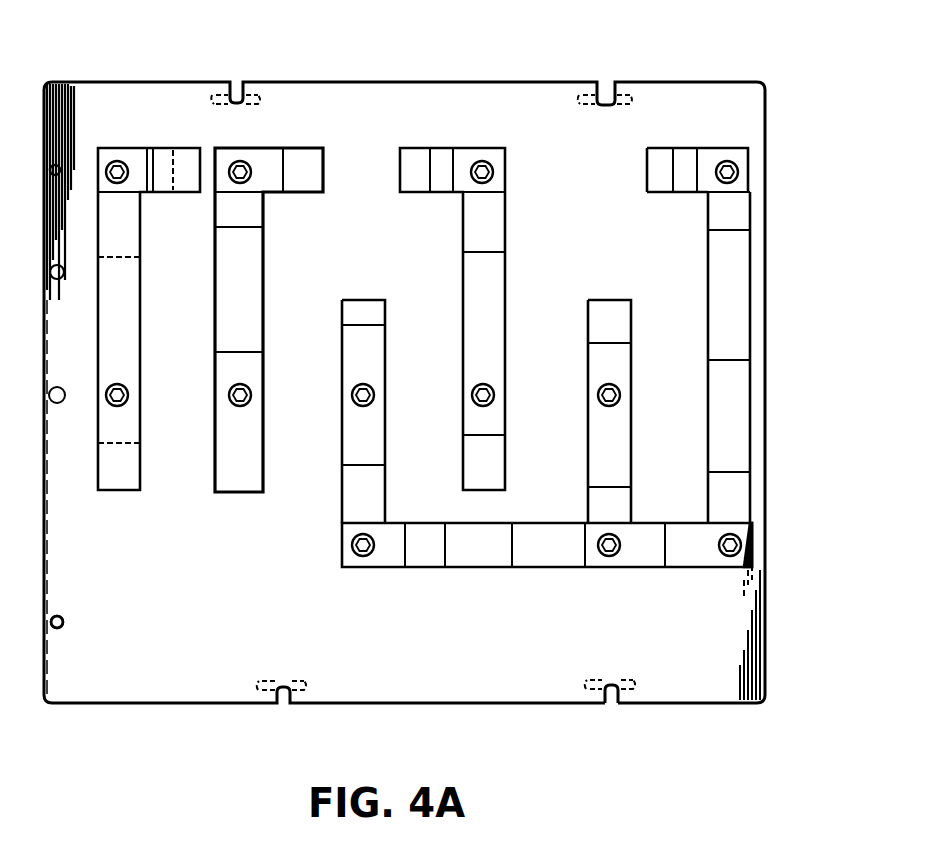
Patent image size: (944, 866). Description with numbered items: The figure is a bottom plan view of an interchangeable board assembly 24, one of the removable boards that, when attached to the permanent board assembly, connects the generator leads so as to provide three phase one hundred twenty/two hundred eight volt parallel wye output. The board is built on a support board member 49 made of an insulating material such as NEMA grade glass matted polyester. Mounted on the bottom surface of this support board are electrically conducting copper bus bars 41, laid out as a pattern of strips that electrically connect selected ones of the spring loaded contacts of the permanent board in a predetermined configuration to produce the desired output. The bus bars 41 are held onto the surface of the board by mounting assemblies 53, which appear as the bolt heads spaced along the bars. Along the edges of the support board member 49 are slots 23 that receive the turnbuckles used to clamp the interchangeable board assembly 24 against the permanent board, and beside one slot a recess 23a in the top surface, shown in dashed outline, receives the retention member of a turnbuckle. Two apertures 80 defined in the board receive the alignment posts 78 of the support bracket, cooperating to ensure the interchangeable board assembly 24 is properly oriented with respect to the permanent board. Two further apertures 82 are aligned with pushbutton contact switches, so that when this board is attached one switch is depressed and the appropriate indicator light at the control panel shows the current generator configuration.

The interchangeable board assembly 24 is at (792, 148).
The support board member 49 is at (712, 103).
The bus bars 41 is at (735, 397).
The mounting assemblies 53 is at (481, 161).
The apertures 82 is at (61, 267).
The alignment posts 78 is at (58, 628).
The apertures 80 is at (63, 622).
The slot 23 is at (611, 698).
The recess 23a is at (628, 697).